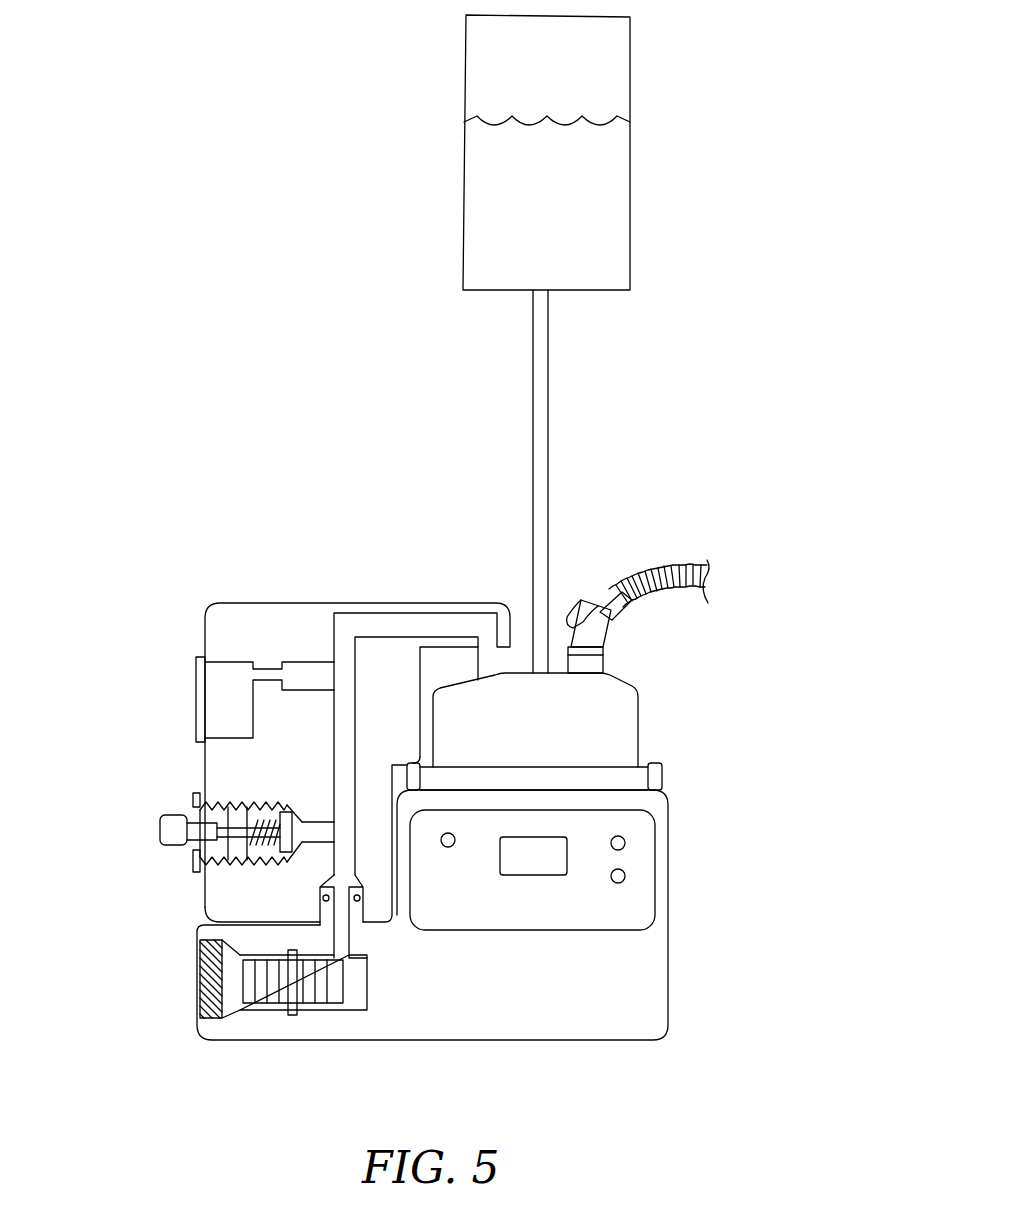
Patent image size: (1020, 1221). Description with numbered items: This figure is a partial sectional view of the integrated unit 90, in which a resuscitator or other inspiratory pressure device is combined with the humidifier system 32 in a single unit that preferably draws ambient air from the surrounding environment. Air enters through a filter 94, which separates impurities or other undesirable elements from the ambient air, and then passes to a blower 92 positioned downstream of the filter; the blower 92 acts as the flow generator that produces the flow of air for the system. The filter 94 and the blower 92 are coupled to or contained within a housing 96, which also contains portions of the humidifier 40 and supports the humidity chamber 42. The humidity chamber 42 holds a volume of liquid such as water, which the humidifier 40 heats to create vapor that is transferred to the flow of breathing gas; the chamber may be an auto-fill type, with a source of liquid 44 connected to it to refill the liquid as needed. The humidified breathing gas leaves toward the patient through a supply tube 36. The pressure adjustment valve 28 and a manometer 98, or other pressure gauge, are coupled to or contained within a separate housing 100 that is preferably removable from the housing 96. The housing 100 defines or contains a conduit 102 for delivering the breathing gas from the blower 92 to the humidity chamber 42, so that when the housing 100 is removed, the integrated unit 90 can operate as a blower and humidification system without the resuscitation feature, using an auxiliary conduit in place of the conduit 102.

The pressure adjustment valve 28 is at (162, 863).
The humidifier system 32 is at (728, 762).
The supply tube 36 is at (645, 568).
The humidifier 40 is at (638, 880).
The humidity chamber 42 is at (640, 737).
The source of liquid 44 is at (464, 200).
The integrated unit 90 is at (215, 488).
The blower 92 is at (315, 1013).
The filter 94 is at (198, 973).
The housing 96 is at (668, 956).
The manometer 98 is at (197, 700).
The housing 100 is at (303, 602).
The conduit 102 is at (384, 610).